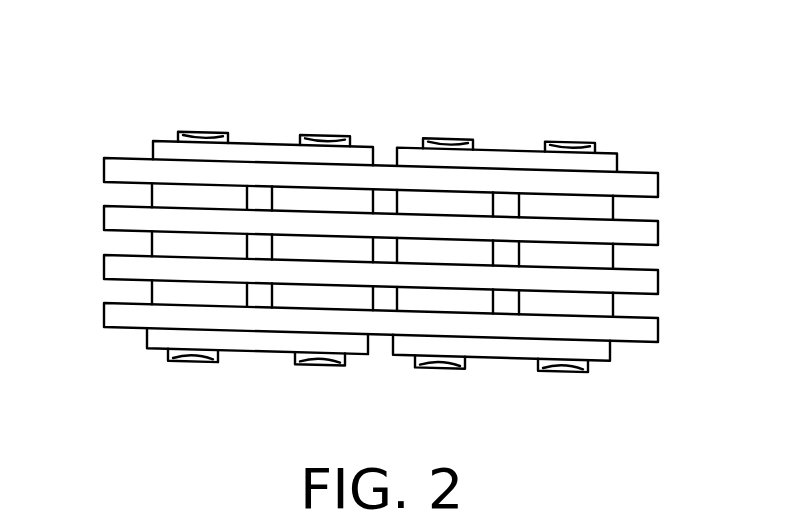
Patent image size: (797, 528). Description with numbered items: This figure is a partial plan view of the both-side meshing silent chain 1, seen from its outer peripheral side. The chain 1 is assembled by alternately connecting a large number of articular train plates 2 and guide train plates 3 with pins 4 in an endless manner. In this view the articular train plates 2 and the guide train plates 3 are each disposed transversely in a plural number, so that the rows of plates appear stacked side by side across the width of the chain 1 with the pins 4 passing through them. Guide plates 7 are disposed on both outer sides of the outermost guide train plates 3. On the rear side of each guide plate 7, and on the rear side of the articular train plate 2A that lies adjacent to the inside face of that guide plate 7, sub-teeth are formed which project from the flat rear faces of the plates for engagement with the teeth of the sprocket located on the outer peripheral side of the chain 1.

The chain 1 is at (562, 122).
The articular train plate 2 is at (112, 218).
The articular train plate adjacent to the guide plate 2A is at (130, 168).
The guide train plate 3 is at (152, 195).
The pin 4 is at (205, 131).
The guide plate 7 is at (272, 147).